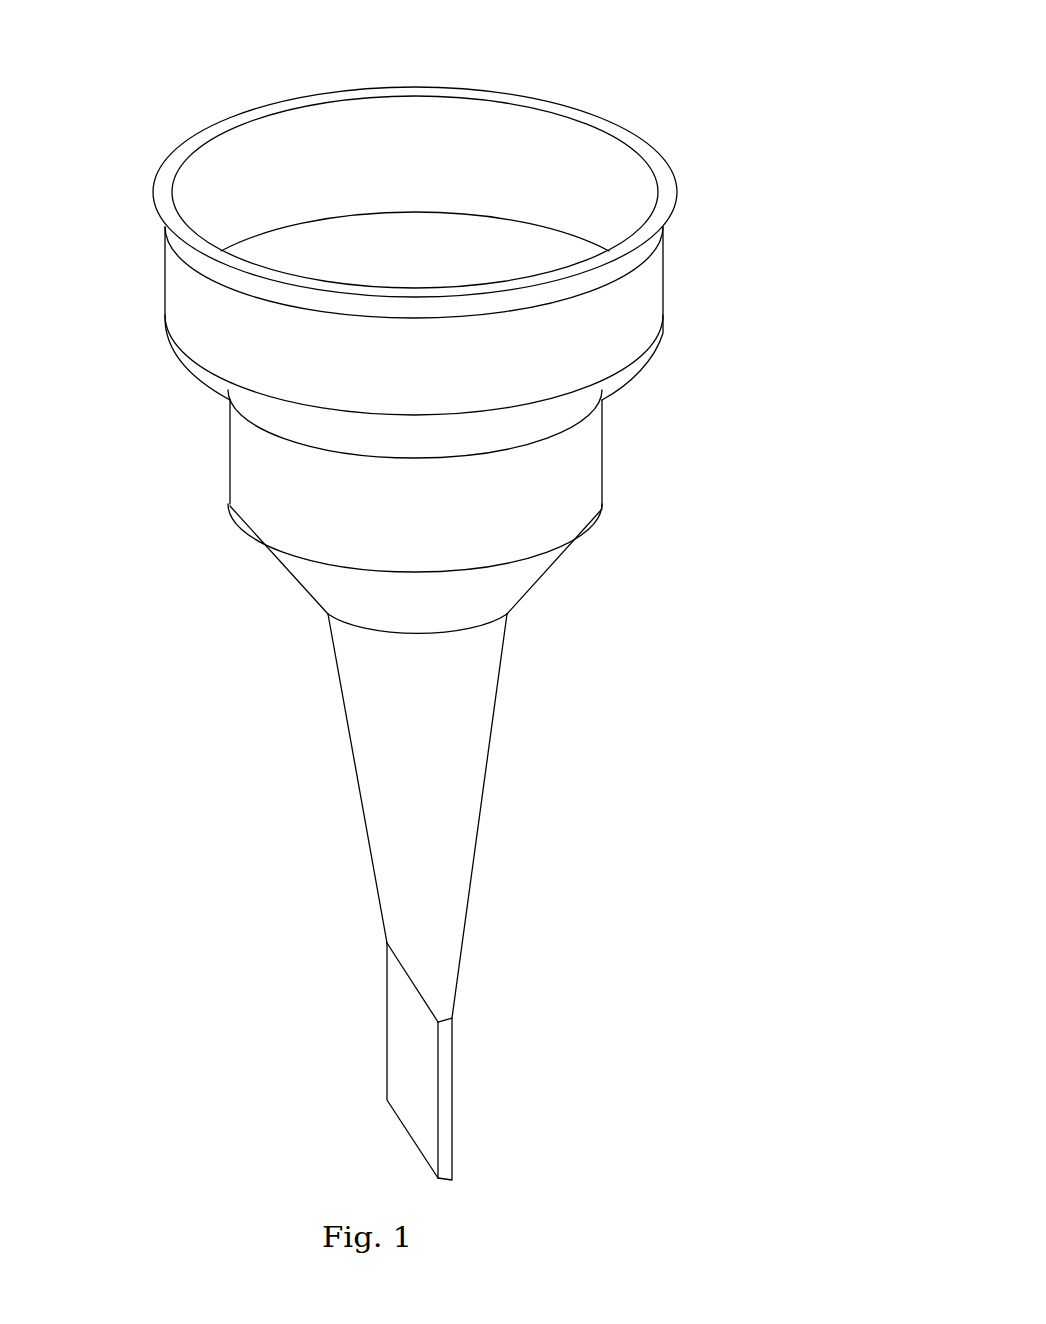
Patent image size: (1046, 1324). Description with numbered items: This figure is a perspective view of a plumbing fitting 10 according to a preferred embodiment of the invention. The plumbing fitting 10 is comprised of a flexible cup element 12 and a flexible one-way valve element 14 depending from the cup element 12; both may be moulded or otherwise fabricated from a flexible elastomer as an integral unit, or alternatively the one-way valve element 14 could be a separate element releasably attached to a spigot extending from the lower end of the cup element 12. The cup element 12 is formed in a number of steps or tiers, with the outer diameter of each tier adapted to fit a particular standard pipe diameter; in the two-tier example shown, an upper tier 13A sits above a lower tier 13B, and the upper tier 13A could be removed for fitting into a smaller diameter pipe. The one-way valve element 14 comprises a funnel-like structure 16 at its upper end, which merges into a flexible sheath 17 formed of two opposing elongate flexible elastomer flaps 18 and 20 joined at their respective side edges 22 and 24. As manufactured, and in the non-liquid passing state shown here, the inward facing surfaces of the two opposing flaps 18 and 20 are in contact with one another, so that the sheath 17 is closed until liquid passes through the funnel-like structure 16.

The plumbing fitting 10 is at (640, 60).
The cup element 12 is at (718, 202).
The upper tier 13A is at (175, 288).
The lower tier 13B is at (243, 470).
The one-way valve element 14 is at (626, 746).
The funnel-like structure 16 is at (373, 775).
The flexible sheath 17 is at (286, 1043).
The elongate flexible elastomer flap 18 is at (402, 1056).
The elongate flexible elastomer flap 20 is at (469, 1094).
The side edge 22 is at (447, 1153).
The side edge 24 is at (387, 973).